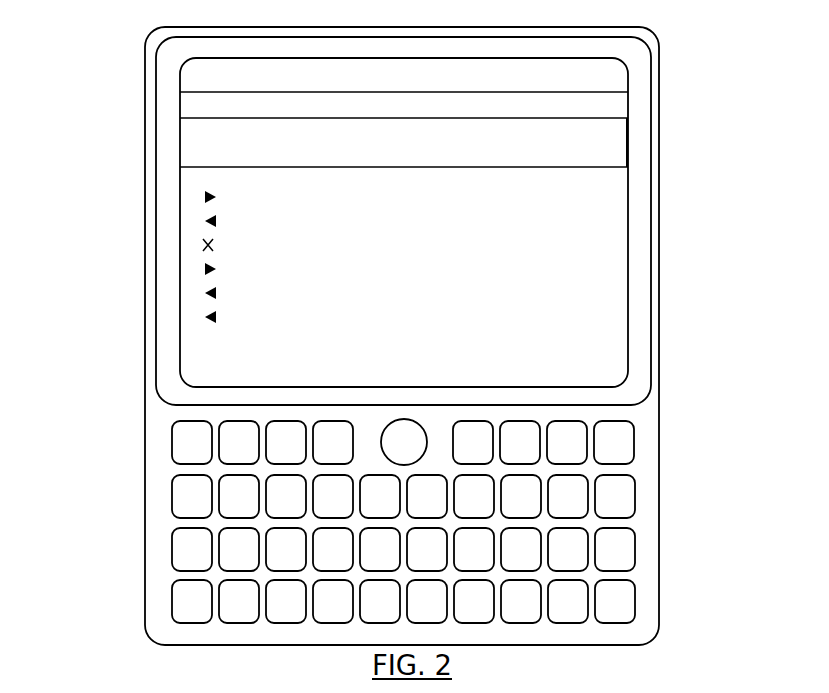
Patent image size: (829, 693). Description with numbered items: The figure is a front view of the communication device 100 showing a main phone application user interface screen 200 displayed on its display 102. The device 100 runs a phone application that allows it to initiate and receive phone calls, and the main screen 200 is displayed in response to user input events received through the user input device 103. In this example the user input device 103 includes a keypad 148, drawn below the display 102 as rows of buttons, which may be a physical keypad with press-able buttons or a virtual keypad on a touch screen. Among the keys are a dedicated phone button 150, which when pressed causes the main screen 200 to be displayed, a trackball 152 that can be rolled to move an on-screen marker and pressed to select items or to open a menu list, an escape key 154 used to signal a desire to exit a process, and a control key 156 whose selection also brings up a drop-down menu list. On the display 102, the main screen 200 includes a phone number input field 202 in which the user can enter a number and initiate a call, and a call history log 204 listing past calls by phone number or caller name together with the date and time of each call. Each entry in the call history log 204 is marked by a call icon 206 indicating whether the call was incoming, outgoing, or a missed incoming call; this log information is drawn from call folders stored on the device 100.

The communication device 100 is at (130, 93).
The display 102 is at (635, 237).
The user input device 103 is at (647, 515).
The keypad 148 is at (418, 514).
The dedicated phone button 150 is at (185, 443).
The trackball 152 is at (413, 442).
The escape key 154 is at (618, 440).
The control key 156 is at (183, 488).
The main phone application user interface screen 200 is at (590, 80).
The phone number input field 202 is at (583, 144).
The call history log 204 is at (498, 305).
The call icons 206 is at (213, 338).